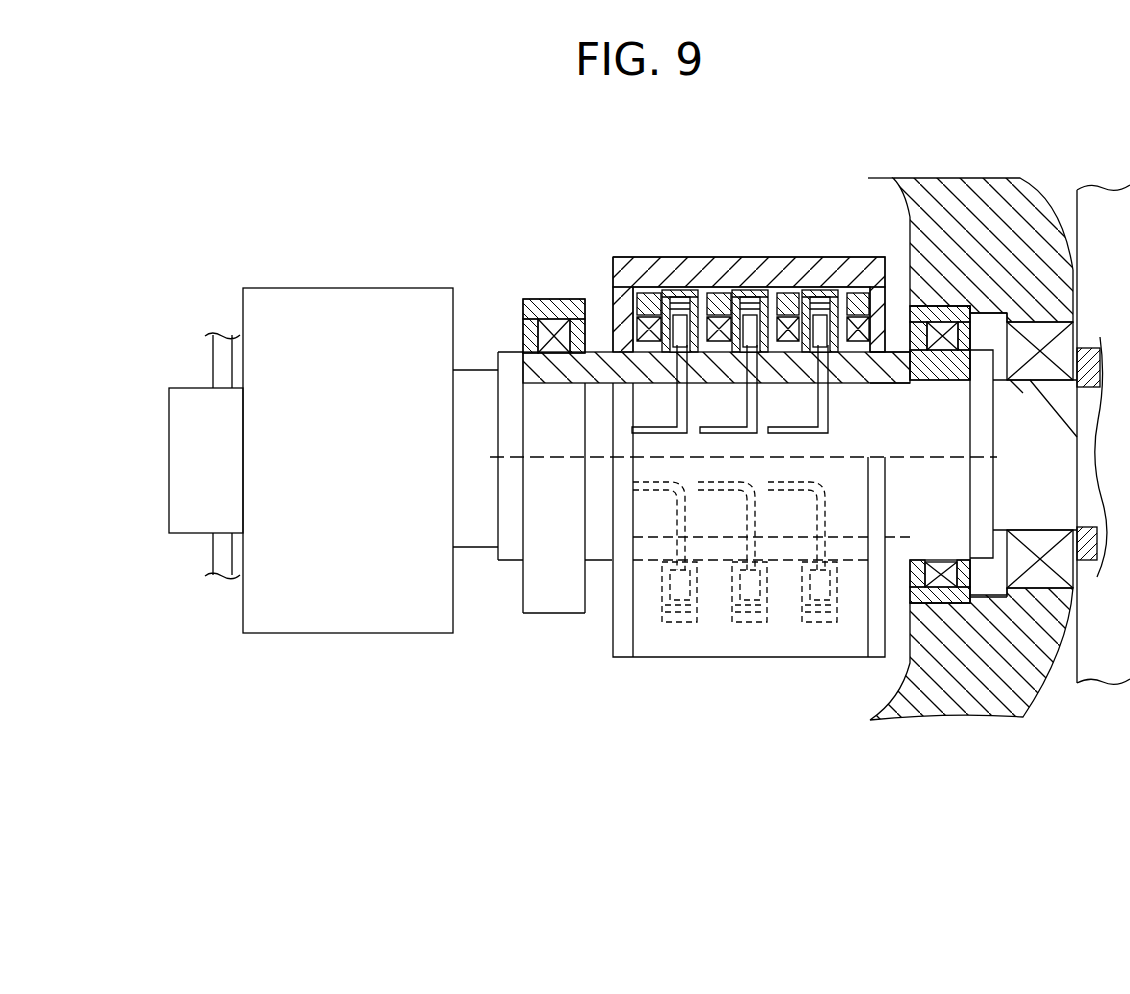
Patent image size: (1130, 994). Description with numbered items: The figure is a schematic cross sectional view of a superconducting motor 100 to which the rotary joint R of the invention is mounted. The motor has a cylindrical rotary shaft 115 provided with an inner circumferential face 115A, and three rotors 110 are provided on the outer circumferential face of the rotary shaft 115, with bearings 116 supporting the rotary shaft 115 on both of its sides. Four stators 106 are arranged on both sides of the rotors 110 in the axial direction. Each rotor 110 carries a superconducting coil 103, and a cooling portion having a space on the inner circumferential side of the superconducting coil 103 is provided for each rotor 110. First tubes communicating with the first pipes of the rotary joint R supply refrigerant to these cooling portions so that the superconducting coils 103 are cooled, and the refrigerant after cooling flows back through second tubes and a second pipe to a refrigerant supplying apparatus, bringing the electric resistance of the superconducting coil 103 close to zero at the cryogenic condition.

The rotary joint R is at (318, 288).
The superconducting motor 100 is at (746, 657).
The superconducting coil 103 is at (892, 372).
The stator 106 is at (620, 330).
The rotor 110 is at (812, 297).
The rotary shaft 115 is at (542, 366).
The inner circumferential face 115A is at (904, 350).
The bearing 116 is at (557, 297).